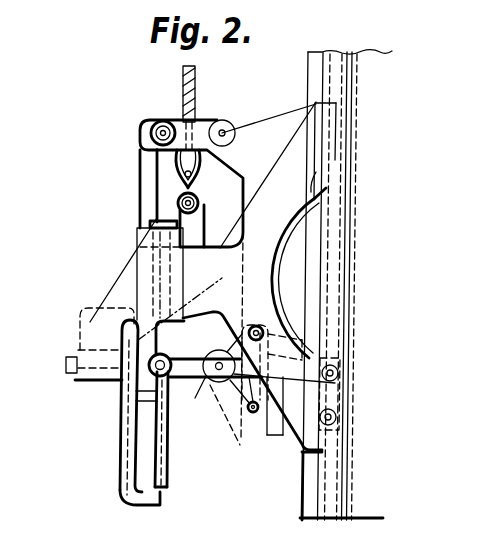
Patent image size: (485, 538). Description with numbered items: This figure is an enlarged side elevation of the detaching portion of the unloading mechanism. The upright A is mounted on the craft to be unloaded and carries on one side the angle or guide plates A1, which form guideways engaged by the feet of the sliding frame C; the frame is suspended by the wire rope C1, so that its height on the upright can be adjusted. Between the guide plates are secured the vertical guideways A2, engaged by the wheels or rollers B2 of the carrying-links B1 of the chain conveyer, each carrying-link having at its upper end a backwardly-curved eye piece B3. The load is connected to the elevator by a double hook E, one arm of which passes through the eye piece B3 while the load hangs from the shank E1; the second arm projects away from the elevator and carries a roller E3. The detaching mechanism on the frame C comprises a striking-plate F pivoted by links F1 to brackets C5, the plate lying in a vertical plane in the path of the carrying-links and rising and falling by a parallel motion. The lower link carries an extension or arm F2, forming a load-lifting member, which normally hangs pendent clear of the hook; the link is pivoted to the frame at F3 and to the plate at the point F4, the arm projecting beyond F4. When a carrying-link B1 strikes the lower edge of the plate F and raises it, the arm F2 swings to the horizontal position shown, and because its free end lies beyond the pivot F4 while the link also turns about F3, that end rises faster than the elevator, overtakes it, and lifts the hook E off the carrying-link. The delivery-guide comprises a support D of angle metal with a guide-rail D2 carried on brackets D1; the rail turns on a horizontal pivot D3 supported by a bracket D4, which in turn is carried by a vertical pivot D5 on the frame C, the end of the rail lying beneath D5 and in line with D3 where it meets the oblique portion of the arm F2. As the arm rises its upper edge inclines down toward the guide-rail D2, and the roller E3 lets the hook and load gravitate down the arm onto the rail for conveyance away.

The upright A is at (345, 498).
The angle or guide plates A1 is at (333, 178).
The vertical guideways A2 is at (300, 457).
The carrying-link B1 is at (265, 412).
The wheels or rollers B2 is at (348, 420).
The backwardly-curved loop or eye piece B3 is at (338, 370).
The sliding frame C is at (236, 271).
The wire rope C1 is at (236, 125).
The brackets C5 is at (150, 332).
The support of angle metal D is at (138, 462).
The brackets D1 is at (137, 413).
The guide-rail D2 is at (200, 371).
The horizontal pivot D3 is at (80, 350).
The bracket D4 is at (132, 273).
The vertical pivot D5 is at (160, 222).
The double hook E is at (262, 337).
The shank E1 is at (255, 412).
The roller E3 is at (272, 323).
The striking-plate F is at (300, 283).
The links F1 is at (199, 130).
The extension or arm F2 is at (300, 380).
The pivot F3 is at (140, 401).
The pivot point F4 is at (250, 413).